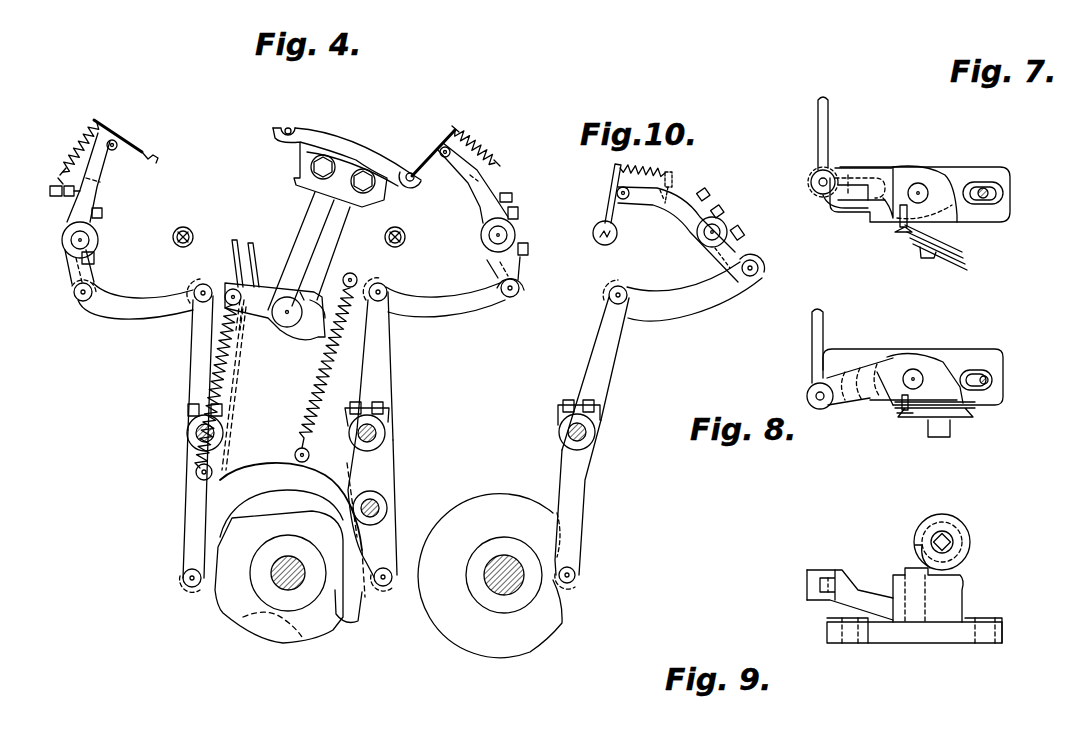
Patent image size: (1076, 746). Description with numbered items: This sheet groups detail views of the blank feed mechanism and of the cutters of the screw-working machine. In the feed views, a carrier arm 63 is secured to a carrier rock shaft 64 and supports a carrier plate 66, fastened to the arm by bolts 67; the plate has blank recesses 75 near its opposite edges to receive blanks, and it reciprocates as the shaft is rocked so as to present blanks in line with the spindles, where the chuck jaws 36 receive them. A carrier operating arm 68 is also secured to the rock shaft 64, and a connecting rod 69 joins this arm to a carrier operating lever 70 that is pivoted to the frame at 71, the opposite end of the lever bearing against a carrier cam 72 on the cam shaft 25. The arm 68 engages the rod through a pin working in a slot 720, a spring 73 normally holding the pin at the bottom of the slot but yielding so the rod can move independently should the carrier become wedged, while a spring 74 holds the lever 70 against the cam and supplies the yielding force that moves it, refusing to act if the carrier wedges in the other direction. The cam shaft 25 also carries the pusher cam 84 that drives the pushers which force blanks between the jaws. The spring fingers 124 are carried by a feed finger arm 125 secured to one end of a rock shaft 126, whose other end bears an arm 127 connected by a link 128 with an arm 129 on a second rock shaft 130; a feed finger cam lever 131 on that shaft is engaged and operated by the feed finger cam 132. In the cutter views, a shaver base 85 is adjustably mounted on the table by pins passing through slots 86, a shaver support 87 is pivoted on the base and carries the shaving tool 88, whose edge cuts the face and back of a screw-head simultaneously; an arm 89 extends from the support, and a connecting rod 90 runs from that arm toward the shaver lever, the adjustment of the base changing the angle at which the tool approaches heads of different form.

In FIG. 4, the cam shaft 25 is at (278, 582).
In FIG. 10, the cam shaft 25 is at (520, 588).
In FIG. 4, the chuck jaws 36 is at (183, 227).
In FIG. 4, the carrier arm 63 is at (306, 225).
In FIG. 4, the carrier rock shaft 64 is at (289, 328).
In FIG. 4, the carrier plate 66 is at (362, 141).
In FIG. 4, the bolts 67 is at (311, 164).
In FIG. 4, the carrier operating arm 68 is at (243, 289).
In FIG. 4, the connecting rod 69 is at (224, 392).
In FIG. 4, the carrier operating lever 70 is at (270, 460).
In FIG. 4, the pivot 71 is at (387, 505).
In FIG. 4, the carrier cam 72 is at (276, 634).
In FIG. 4, the spring 73 is at (214, 392).
In FIG. 4, the spring 74 is at (319, 367).
In FIG. 4, the blank recesses 75 is at (286, 126).
In FIG. 4, the pusher cam 84 is at (183, 588).
In FIG. 7, the shaver base 85 is at (1012, 172).
In FIG. 8, the shaver base 85 is at (1005, 357).
In FIG. 9, the shaver base 85 is at (1004, 633).
In FIG. 7, the slots 86 is at (979, 182).
In FIG. 8, the slots 86 is at (975, 370).
In FIG. 9, the slots 86 is at (968, 632).
In FIG. 7, the shaver support 87 is at (958, 228).
In FIG. 8, the shaver support 87 is at (960, 398).
In FIG. 9, the shaver support 87 is at (945, 604).
In FIG. 7, the shaving tool 88 is at (952, 256).
In FIG. 8, the shaving tool 88 is at (958, 420).
In FIG. 9, the shaving tool 88 is at (968, 538).
In FIG. 7, the arm 89 is at (875, 168).
In FIG. 8, the arm 89 is at (870, 360).
In FIG. 9, the arm 89 is at (858, 590).
In FIG. 7, the connecting rod 90 is at (828, 123).
In FIG. 8, the connecting rod 90 is at (826, 330).
In FIG. 9, the connecting rod 90 is at (808, 580).
In FIG. 4, the spring fingers 124 is at (138, 150).
In FIG. 10, the spring fingers 124 is at (608, 218).
In FIG. 4, the feed finger arm 125 is at (92, 196).
In FIG. 10, the feed finger arm 125 is at (688, 202).
In FIG. 4, the rock shaft 126 is at (86, 242).
In FIG. 10, the rock shaft 126 is at (703, 230).
In FIG. 4, the arm 127 is at (74, 282).
In FIG. 10, the arm 127 is at (730, 257).
In FIG. 4, the link 128 is at (112, 310).
In FIG. 10, the link 128 is at (653, 318).
In FIG. 4, the arm 129 is at (190, 360).
In FIG. 10, the arm 129 is at (582, 358).
In FIG. 4, the rock shaft 130 is at (187, 434).
In FIG. 10, the rock shaft 130 is at (560, 431).
In FIG. 4, the feed finger cam lever 131 is at (186, 513).
In FIG. 10, the feed finger cam lever 131 is at (560, 470).
In FIG. 4, the feed finger cam 132 is at (346, 628).
In FIG. 10, the feed finger cam 132 is at (511, 583).
In FIG. 4, the slot 720 is at (240, 246).